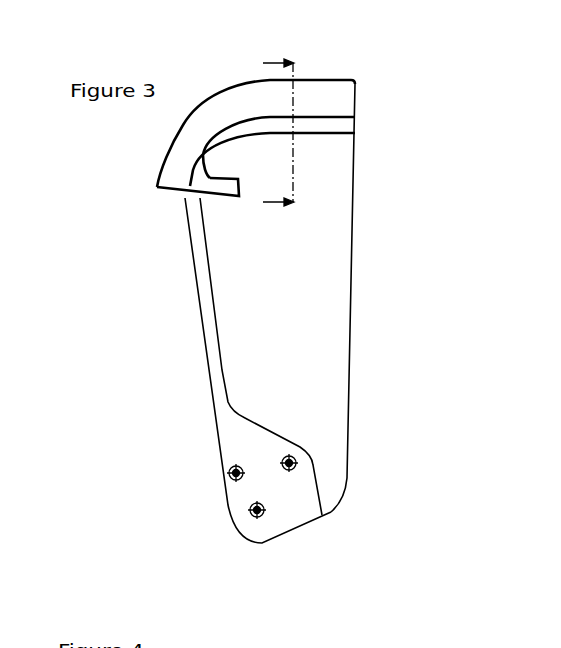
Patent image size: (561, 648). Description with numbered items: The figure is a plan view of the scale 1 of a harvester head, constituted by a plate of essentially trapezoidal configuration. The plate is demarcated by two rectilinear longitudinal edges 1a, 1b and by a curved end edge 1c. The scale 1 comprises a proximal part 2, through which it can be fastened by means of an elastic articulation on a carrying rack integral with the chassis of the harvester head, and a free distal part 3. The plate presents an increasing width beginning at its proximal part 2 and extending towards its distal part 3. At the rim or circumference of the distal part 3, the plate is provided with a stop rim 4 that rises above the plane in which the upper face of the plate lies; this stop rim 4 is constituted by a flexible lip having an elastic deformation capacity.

The scale 1 is at (322, 253).
The longitudinal edge 1a is at (207, 368).
The longitudinal edge 1b is at (352, 310).
The curved end edge 1c is at (292, 537).
The proximal part 2 is at (328, 530).
The distal part 3 is at (203, 90).
The stop rim 4 is at (332, 103).